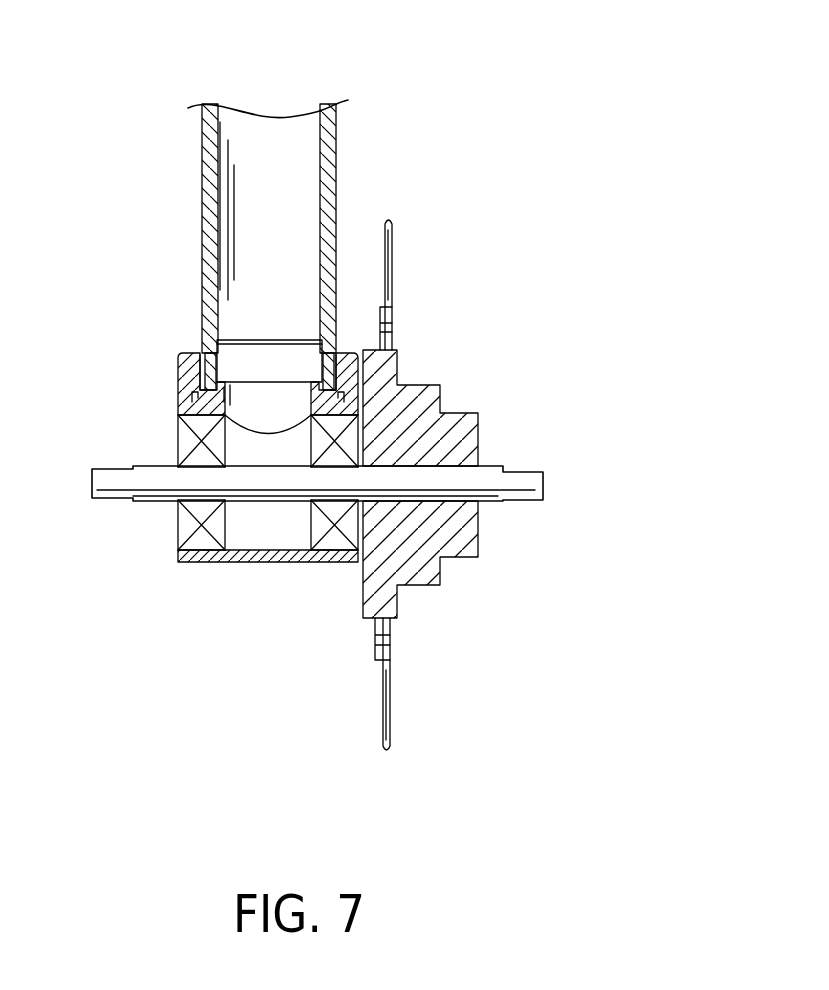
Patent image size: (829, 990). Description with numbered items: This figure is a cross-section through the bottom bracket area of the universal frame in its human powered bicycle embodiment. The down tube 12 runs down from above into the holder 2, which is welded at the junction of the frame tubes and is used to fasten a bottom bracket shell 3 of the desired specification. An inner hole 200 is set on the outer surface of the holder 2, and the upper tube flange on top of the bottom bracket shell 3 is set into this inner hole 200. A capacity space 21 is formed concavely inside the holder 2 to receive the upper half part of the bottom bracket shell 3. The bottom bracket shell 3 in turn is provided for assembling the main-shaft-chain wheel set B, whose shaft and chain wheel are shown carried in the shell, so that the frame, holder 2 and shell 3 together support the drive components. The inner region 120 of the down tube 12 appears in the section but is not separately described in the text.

The down tube 12 is at (336, 167).
The inner bore of tube 120 is at (233, 254).
The capacity space 21 is at (180, 373).
The holder 2 is at (180, 380).
The inner hole 200 is at (177, 383).
The bottom bracket shell 3 is at (260, 561).
The main-shaft-chain wheel set B is at (474, 405).